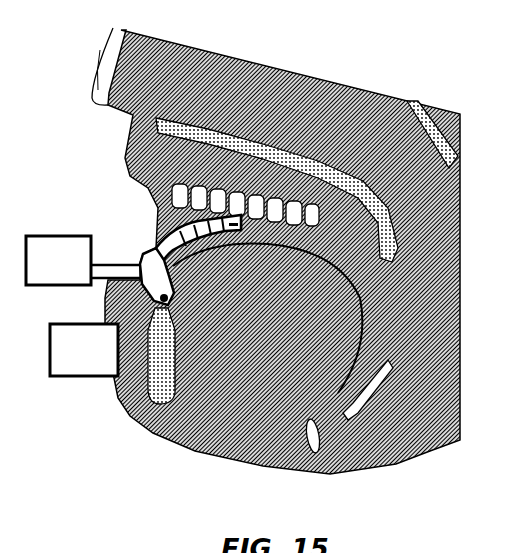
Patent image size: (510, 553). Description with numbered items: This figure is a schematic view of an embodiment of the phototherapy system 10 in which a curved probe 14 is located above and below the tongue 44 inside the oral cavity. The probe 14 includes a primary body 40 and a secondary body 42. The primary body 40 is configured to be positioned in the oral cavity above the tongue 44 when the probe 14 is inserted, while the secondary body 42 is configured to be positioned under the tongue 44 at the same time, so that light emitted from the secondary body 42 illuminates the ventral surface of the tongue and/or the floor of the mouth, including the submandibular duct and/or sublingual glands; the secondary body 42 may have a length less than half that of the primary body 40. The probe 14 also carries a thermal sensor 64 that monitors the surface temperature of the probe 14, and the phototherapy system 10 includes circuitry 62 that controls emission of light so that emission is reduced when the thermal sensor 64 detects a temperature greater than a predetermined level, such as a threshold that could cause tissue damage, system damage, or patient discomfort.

The phototherapy system 10 is at (72, 28).
The probe 14 is at (133, 255).
The primary body 40 is at (247, 212).
The secondary body 42 is at (125, 320).
The tongue 44 is at (281, 316).
The circuitry 62 is at (83, 260).
The thermal sensor 64 is at (180, 218).